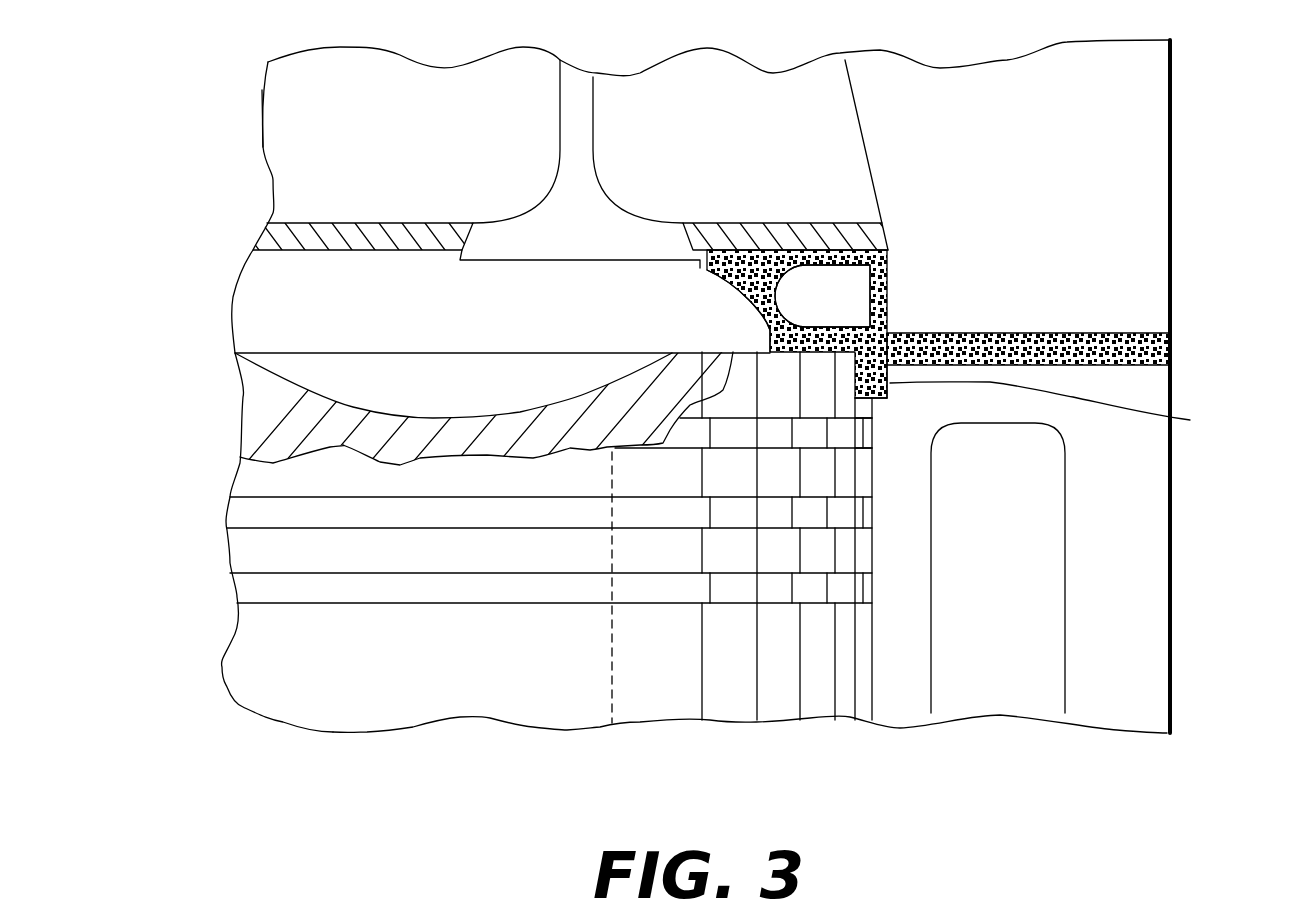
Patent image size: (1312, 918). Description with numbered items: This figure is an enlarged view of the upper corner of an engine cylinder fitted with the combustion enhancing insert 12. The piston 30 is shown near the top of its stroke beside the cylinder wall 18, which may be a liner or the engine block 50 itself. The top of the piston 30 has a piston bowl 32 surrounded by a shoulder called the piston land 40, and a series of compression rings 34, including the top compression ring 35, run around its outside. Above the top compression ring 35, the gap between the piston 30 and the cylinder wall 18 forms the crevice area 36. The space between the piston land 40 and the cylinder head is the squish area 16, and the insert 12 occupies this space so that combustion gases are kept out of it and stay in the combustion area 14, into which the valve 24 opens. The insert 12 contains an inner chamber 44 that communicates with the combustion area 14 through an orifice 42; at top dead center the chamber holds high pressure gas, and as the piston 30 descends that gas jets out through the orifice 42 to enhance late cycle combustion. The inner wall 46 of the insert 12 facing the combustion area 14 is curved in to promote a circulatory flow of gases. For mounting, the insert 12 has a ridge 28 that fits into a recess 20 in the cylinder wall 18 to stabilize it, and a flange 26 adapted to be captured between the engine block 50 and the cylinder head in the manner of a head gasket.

The combustion enhancing insert 12 is at (845, 307).
The combustion area 14 is at (273, 298).
The squish area 16 is at (787, 250).
The cylinder wall 18 is at (931, 637).
The recess 20 is at (890, 373).
The valve 24 is at (635, 218).
The flange 26 is at (1130, 333).
The ridge 28 is at (1190, 420).
The piston 30 is at (410, 728).
The piston bowl 32 is at (363, 432).
The compression rings 34 is at (868, 503).
The top compression ring 35 is at (870, 430).
The crevice area 36 is at (867, 403).
The piston land 40 is at (785, 352).
The orifice 42 is at (770, 330).
The inner chamber 44 is at (890, 280).
The inner wall 46 is at (717, 274).
The engine block 50 is at (1170, 633).